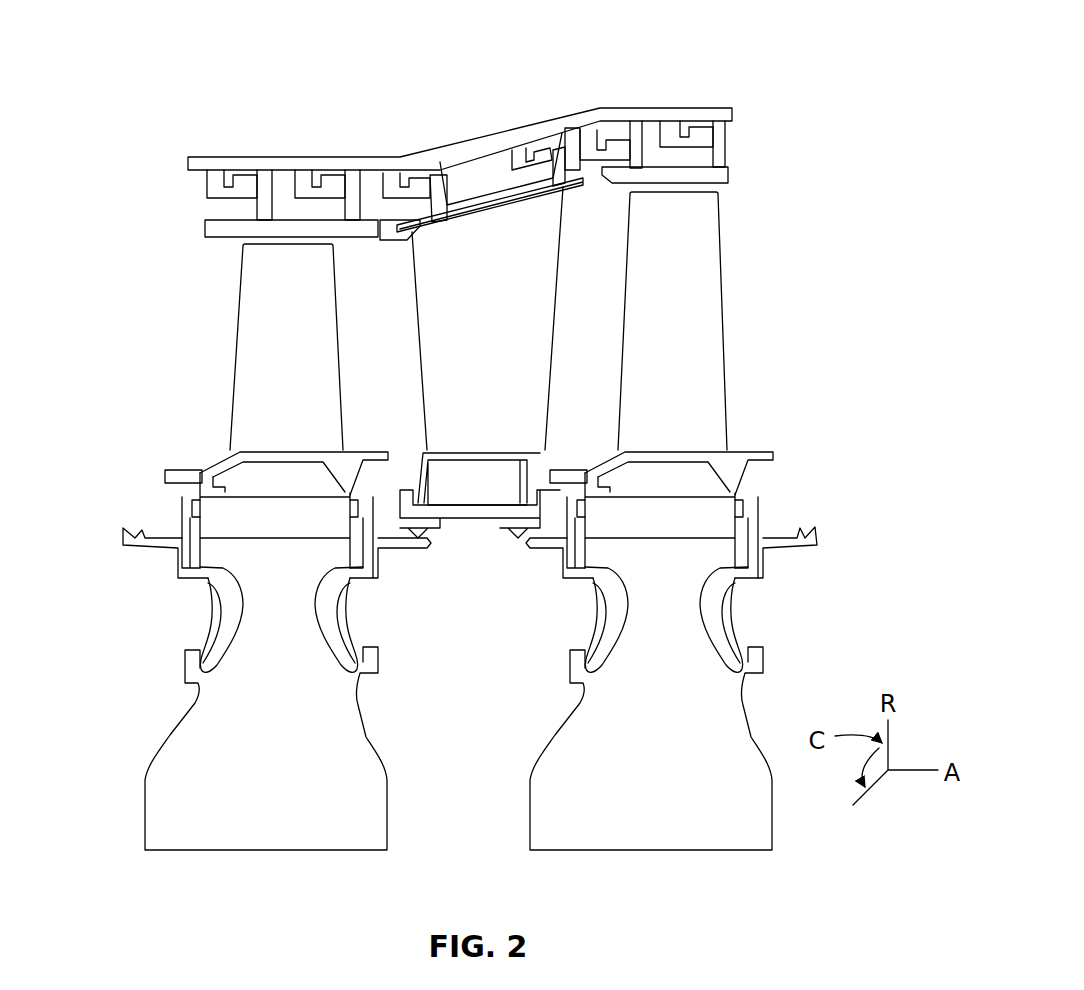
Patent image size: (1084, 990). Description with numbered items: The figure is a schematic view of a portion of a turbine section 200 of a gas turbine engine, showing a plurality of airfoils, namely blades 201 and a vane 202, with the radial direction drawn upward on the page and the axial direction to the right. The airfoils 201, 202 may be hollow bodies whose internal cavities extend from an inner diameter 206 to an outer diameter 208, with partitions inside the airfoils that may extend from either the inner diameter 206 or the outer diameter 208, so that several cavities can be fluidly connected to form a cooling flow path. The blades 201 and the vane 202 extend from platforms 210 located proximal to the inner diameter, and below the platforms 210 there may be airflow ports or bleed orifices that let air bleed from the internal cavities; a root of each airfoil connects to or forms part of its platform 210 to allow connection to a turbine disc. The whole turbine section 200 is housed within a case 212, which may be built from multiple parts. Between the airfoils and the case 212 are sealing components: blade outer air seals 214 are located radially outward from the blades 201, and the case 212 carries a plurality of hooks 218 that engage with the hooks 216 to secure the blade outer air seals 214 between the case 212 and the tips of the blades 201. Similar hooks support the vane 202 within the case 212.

The turbine section 200 is at (126, 47).
The blade 201 is at (322, 297).
The vane 202 is at (525, 270).
The inner diameter 206 is at (353, 438).
The outer diameter 208 is at (225, 258).
The platform 210 is at (550, 453).
The case 212 is at (478, 140).
The blade outer air seal 214 is at (277, 227).
The hook 216 is at (262, 182).
The hook 218 is at (340, 193).